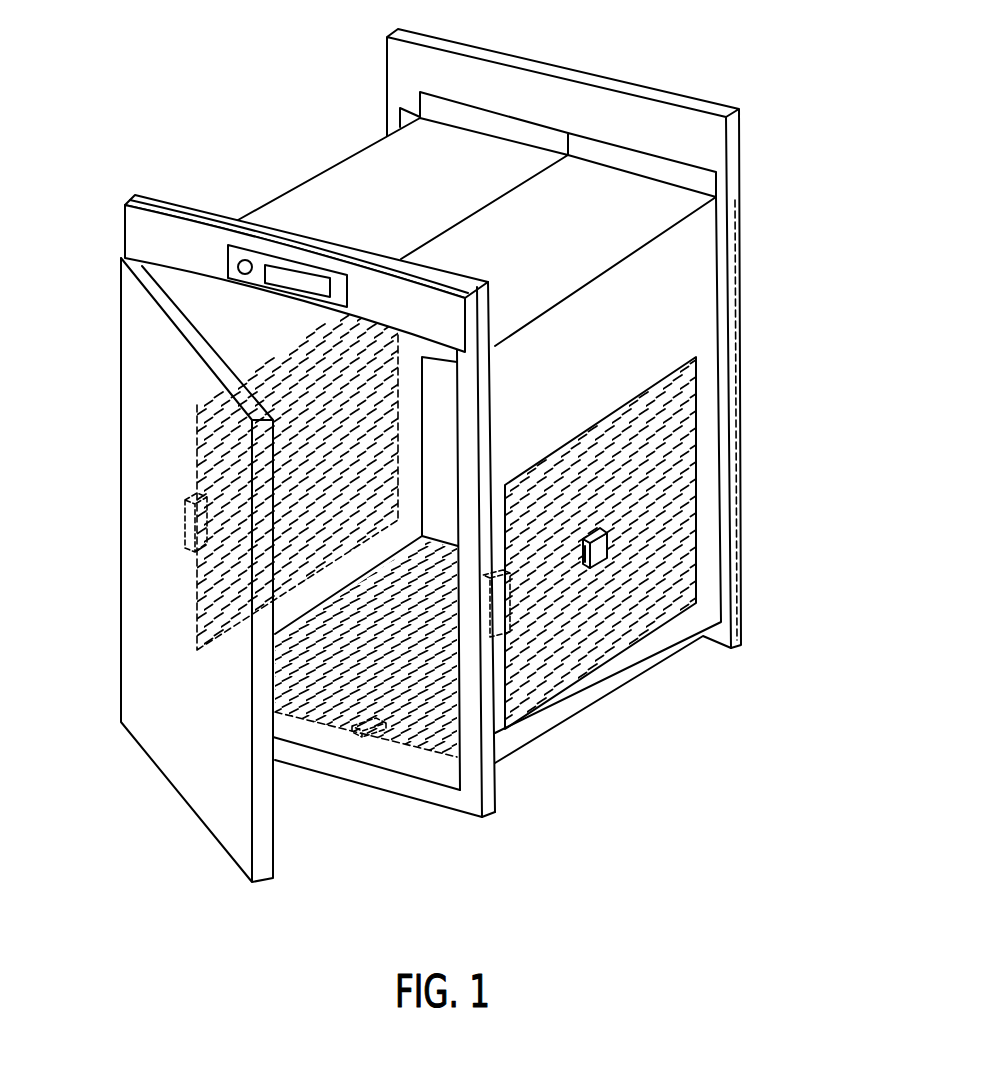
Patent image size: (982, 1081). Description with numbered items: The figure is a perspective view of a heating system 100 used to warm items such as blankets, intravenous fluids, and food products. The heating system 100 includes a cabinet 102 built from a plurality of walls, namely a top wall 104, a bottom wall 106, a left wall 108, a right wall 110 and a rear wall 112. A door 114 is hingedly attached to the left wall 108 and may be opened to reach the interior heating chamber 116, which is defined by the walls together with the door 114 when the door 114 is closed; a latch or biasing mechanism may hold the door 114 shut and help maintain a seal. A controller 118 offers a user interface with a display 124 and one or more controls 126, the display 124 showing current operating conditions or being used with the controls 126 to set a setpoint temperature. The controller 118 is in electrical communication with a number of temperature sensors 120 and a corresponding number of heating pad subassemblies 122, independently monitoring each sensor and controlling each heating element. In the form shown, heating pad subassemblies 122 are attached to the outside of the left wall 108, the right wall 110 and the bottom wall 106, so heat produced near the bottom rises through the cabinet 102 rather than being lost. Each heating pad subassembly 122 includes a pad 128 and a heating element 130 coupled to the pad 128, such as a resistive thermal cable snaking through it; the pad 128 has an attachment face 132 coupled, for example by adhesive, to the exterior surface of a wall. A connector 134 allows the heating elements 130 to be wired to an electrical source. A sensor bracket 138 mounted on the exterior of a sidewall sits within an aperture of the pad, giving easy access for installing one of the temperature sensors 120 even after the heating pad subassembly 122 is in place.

The heating system 100 is at (193, 100).
The cabinet 102 is at (431, 480).
The top wall 104 is at (581, 243).
The bottom wall 106 is at (423, 762).
The left wall 108 is at (266, 343).
The right wall 110 is at (429, 532).
The rear wall 112 is at (724, 208).
The door 114 is at (195, 777).
The interior heating chamber 116 is at (337, 612).
The controller 118 is at (310, 491).
The temperature sensors 120 is at (606, 547).
The heating pad subassemblies 122 is at (645, 580).
The display 124 is at (307, 277).
The controls 126 is at (240, 261).
The pad 128 is at (690, 356).
The heating element 130 is at (655, 400).
The attachment face 132 is at (308, 661).
The connector 134 is at (487, 585).
The sensor bracket 138 is at (591, 536).